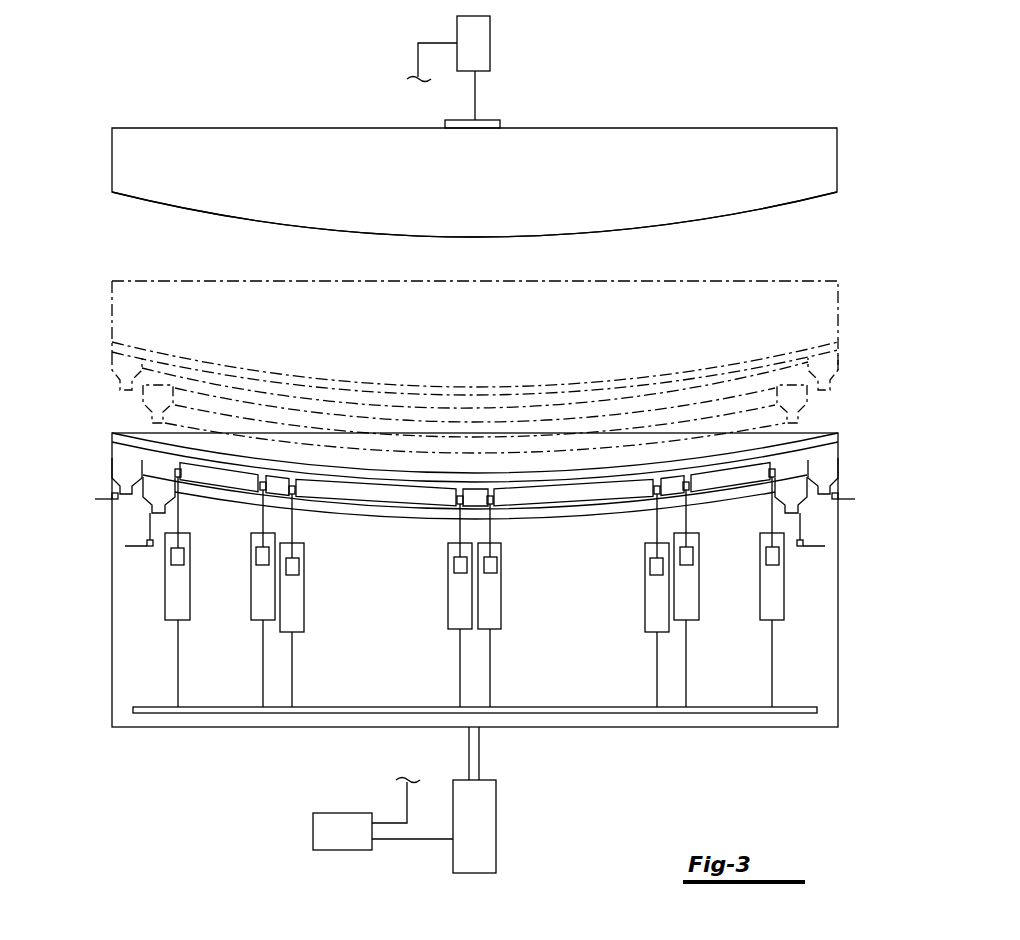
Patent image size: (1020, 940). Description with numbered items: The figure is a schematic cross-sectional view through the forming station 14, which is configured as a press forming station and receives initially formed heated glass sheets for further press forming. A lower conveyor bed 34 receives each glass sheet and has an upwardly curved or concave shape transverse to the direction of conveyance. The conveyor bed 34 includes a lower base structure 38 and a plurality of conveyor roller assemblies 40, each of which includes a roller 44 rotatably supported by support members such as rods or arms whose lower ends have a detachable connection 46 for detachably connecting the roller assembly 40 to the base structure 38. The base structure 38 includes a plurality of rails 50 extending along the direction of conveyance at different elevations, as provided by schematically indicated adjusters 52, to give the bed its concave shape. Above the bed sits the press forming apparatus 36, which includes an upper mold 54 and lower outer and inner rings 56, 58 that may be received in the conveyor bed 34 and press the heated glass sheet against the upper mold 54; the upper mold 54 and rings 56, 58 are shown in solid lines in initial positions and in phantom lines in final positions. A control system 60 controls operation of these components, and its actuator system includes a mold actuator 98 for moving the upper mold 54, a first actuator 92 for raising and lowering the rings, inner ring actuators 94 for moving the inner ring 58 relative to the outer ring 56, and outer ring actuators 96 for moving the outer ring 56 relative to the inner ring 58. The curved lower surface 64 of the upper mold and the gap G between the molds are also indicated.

The forming station 14 is at (728, 58).
The mold actuator 98 is at (490, 43).
The upper mold 54 is at (112, 160).
The curved forming surface of upper mold 64 is at (765, 212).
The gap G is at (468, 483).
The outer ring 56 is at (845, 372).
The inner ring 58 is at (814, 404).
The press forming apparatus 36 is at (99, 483).
The lower base structure 38 is at (698, 748).
The conveyor bed 34 is at (787, 546).
The roller 44 is at (226, 478).
The conveyor roller assembly 40 is at (172, 527).
The outer ring actuator 96 is at (109, 505).
The inner ring actuator 94 is at (142, 553).
The detachable connection 46 is at (766, 555).
The rail 50 is at (190, 587).
The adjuster 52 is at (815, 668).
The first actuator 92 is at (496, 826).
The control system 60 is at (285, 865).